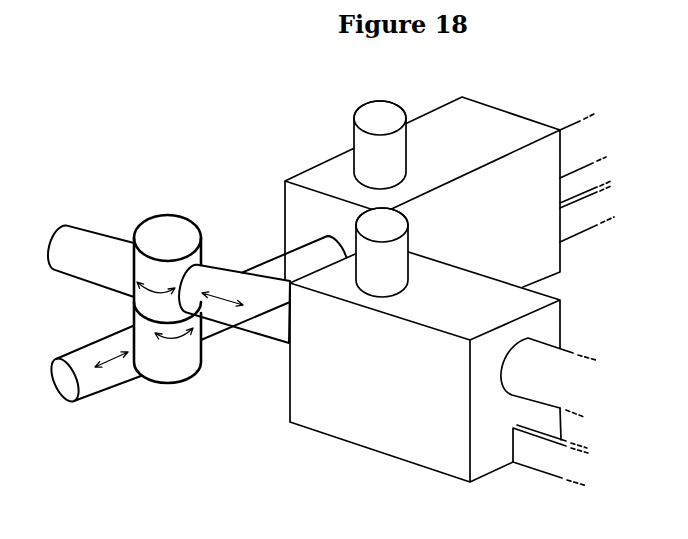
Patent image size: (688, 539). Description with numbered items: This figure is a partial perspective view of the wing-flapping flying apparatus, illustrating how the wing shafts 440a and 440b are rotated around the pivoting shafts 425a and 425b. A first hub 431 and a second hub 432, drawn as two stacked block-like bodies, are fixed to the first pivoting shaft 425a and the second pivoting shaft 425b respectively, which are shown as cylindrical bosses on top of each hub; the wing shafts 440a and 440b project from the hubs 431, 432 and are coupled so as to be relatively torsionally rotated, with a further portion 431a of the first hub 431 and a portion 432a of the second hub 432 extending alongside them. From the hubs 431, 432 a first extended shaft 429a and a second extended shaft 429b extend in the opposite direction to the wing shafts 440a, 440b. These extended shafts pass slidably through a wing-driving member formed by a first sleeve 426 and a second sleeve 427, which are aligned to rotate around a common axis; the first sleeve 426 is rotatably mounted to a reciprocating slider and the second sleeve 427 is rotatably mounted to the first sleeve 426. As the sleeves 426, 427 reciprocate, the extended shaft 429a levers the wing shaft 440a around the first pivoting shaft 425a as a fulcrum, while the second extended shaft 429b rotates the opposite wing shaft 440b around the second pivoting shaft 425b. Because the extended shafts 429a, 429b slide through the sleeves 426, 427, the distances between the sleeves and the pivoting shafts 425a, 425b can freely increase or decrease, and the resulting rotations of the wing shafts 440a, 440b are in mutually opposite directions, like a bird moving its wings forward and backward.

The first pivoting shaft 425a is at (366, 222).
The second pivoting shaft 425b is at (383, 111).
The first sleeve 426 is at (137, 300).
The second sleeve 427 is at (188, 353).
The first extended shaft 429a is at (255, 295).
The second extended shaft 429b is at (98, 380).
The first hub 431 is at (395, 437).
The mounting plate of lower housing 431a is at (542, 458).
The second hub 432 is at (448, 118).
The connecting rod of upper housing 432a is at (580, 217).
The wing shaft 440a is at (575, 368).
The wing shaft 440b is at (582, 130).